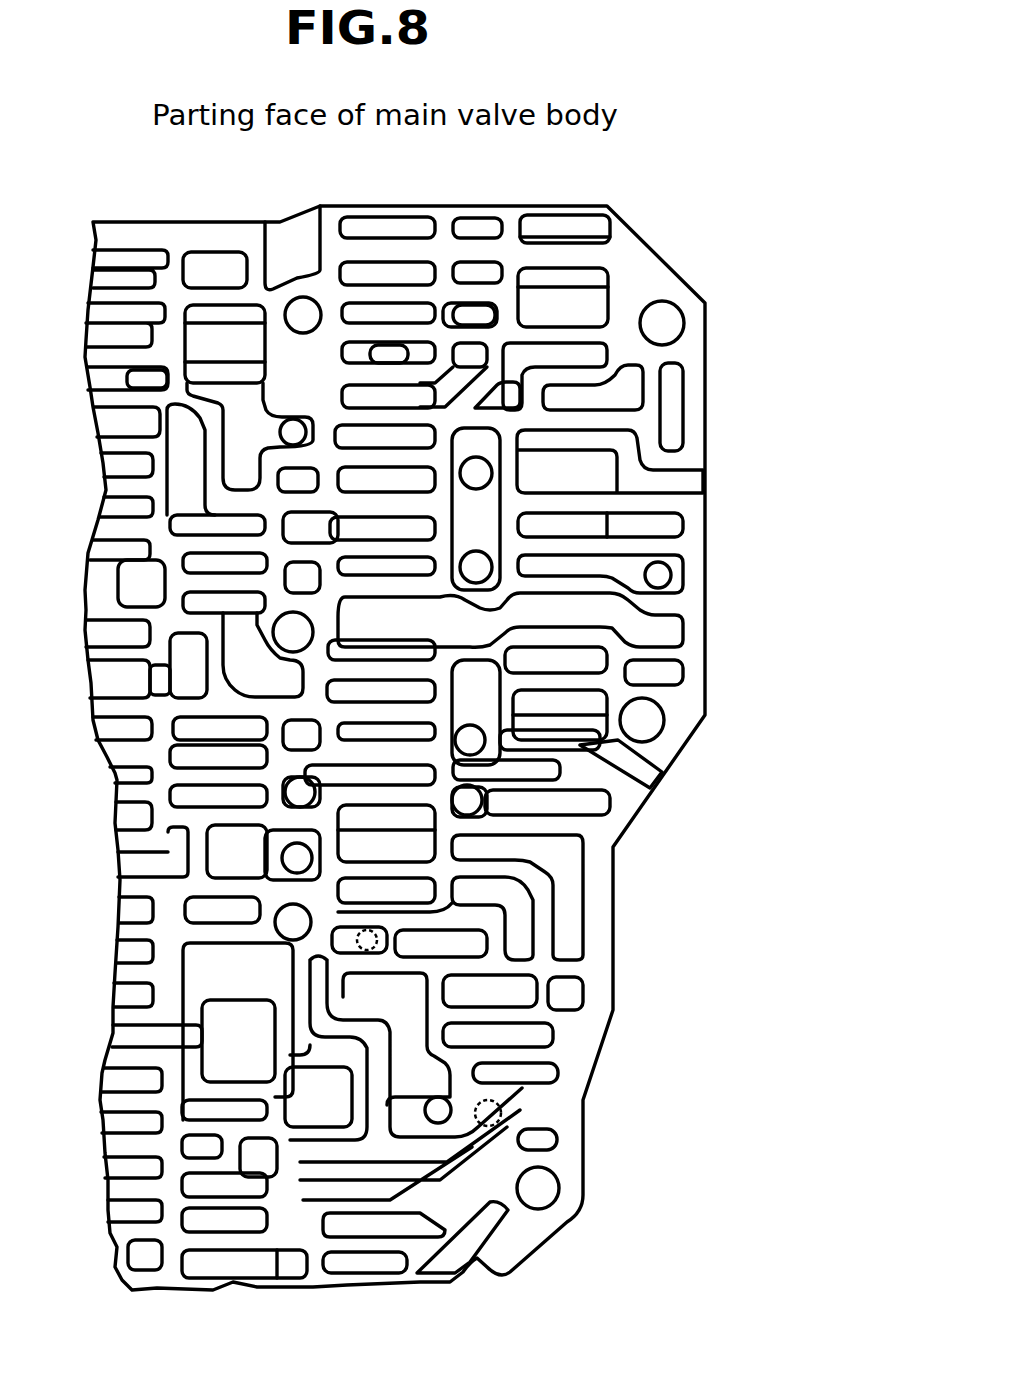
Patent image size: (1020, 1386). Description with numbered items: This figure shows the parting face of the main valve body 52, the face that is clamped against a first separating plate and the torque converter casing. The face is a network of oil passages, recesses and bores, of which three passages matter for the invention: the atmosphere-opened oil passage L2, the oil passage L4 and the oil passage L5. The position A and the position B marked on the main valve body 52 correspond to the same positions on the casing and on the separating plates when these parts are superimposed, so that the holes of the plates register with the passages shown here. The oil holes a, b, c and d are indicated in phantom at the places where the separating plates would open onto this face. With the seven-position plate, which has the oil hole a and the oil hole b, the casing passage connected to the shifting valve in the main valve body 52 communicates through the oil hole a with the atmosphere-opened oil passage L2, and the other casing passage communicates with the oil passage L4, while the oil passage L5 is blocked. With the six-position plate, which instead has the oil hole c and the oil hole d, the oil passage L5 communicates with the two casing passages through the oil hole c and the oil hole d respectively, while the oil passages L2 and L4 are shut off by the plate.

The main valve body 52 is at (695, 538).
The position A is at (682, 251).
The position B is at (678, 814).
The oil passage L5 is at (315, 1005).
The oil passage L2 is at (565, 1100).
The oil passage L4 is at (493, 1165).
The oil hole a is at (555, 1078).
The oil hole b is at (558, 1142).
The oil hole c is at (377, 940).
The oil hole d is at (425, 1110).